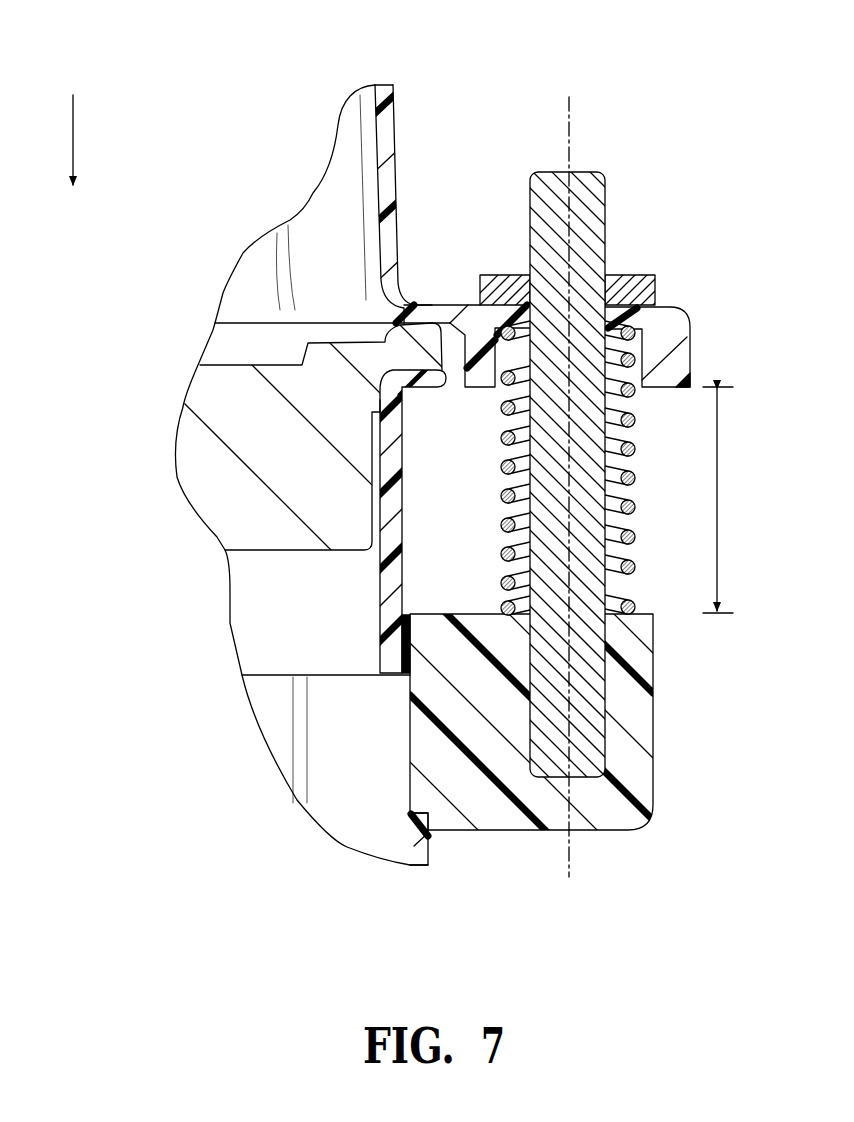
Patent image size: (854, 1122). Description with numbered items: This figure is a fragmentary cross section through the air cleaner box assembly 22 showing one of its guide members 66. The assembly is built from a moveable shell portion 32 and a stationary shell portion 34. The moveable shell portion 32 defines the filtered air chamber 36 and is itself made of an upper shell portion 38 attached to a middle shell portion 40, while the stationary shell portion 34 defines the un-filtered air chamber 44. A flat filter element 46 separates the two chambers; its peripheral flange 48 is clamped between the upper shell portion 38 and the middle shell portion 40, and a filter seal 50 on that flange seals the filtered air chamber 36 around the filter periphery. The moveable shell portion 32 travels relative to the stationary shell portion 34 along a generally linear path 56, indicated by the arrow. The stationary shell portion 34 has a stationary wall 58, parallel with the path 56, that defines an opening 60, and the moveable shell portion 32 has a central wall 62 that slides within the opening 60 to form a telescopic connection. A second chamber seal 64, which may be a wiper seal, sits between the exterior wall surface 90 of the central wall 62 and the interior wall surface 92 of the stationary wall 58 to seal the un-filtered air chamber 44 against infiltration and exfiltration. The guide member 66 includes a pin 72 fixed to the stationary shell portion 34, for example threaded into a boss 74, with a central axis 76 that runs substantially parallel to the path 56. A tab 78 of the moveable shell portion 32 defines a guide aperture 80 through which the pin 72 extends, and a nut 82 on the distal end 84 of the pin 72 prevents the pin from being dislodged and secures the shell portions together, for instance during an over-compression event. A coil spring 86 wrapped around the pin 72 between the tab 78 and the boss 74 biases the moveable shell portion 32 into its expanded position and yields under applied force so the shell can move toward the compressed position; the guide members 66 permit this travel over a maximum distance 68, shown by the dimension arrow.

The air cleaner box assembly 22 is at (320, 88).
The moveable shell portion 32 is at (404, 113).
The stationary shell portion 34 is at (343, 852).
The filtered air chamber 36 is at (321, 248).
The upper shell portion 38 is at (342, 193).
The middle shell portion 40 is at (276, 620).
The un-filtered air chamber 44 is at (355, 742).
The filter element 46 is at (226, 470).
The peripheral flange 48 is at (422, 348).
The filter seal 50 is at (417, 323).
The path 56 is at (80, 138).
The stationary wall 58 is at (420, 850).
The opening 60 is at (368, 636).
The central wall 62 is at (392, 524).
The second chamber seal 64 is at (366, 638).
The guide member 66 is at (647, 468).
The maximum distance 68 is at (718, 505).
The pin 72 is at (597, 192).
The boss 74 is at (640, 775).
The central axis 76 is at (582, 97).
The tab 78 is at (672, 326).
The guide aperture 80 is at (598, 315).
The nut 82 is at (498, 287).
The distal end 84 is at (584, 168).
The spring 86 is at (635, 537).
The exterior wall surface 90 is at (398, 480).
The interior wall surface 92 is at (410, 785).